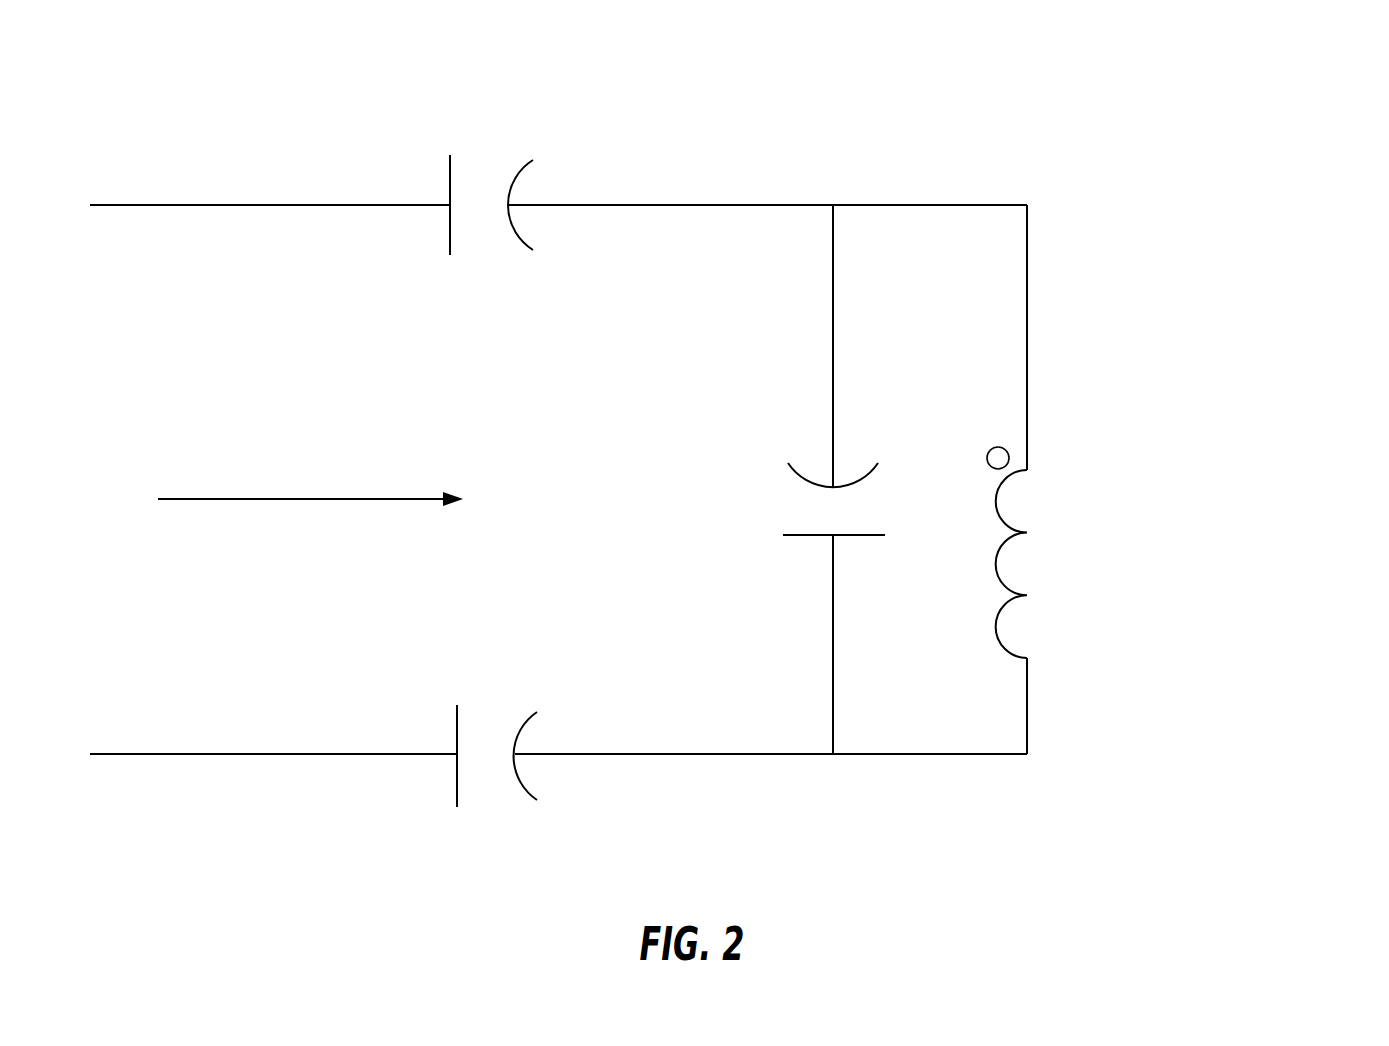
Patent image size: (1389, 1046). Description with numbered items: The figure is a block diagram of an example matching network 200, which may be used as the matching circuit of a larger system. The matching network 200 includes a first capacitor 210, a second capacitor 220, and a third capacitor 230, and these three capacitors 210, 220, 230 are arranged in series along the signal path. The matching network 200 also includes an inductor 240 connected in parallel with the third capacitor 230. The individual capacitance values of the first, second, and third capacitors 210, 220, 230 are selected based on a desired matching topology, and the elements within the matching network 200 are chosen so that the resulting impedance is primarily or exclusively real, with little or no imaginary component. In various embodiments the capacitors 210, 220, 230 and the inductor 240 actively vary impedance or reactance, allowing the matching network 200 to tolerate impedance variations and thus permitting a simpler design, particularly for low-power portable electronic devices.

The matching network 200 is at (1310, 82).
The first capacitor C1 210 is at (449, 177).
The second capacitor C2 220 is at (456, 785).
The third capacitor C3 230 is at (806, 537).
The inductor L1 240 is at (1027, 440).